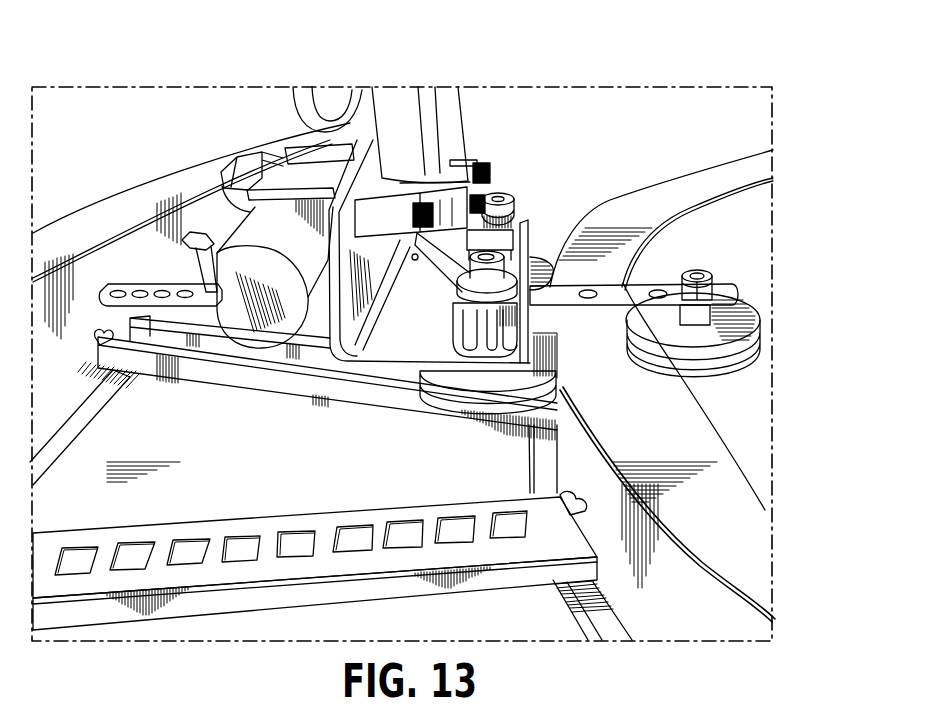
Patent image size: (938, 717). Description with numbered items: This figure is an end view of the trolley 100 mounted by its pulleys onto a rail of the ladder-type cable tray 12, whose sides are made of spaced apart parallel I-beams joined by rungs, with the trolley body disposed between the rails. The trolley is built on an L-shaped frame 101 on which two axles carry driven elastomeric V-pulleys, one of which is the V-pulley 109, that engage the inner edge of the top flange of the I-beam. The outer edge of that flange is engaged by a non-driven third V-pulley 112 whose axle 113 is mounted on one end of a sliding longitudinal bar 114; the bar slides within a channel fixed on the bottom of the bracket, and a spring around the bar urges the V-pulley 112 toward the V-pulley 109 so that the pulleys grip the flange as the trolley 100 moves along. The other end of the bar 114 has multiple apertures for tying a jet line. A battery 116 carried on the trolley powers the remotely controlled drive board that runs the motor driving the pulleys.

The trolley 100 is at (516, 117).
The L-shaped frame 101 is at (420, 317).
The V-pulley 109 is at (557, 360).
The V-pulley 112 is at (760, 348).
The axle 113 is at (697, 270).
The sliding longitudinal bar 114 is at (573, 280).
The battery 116 is at (240, 298).
The tray 12 is at (647, 578).